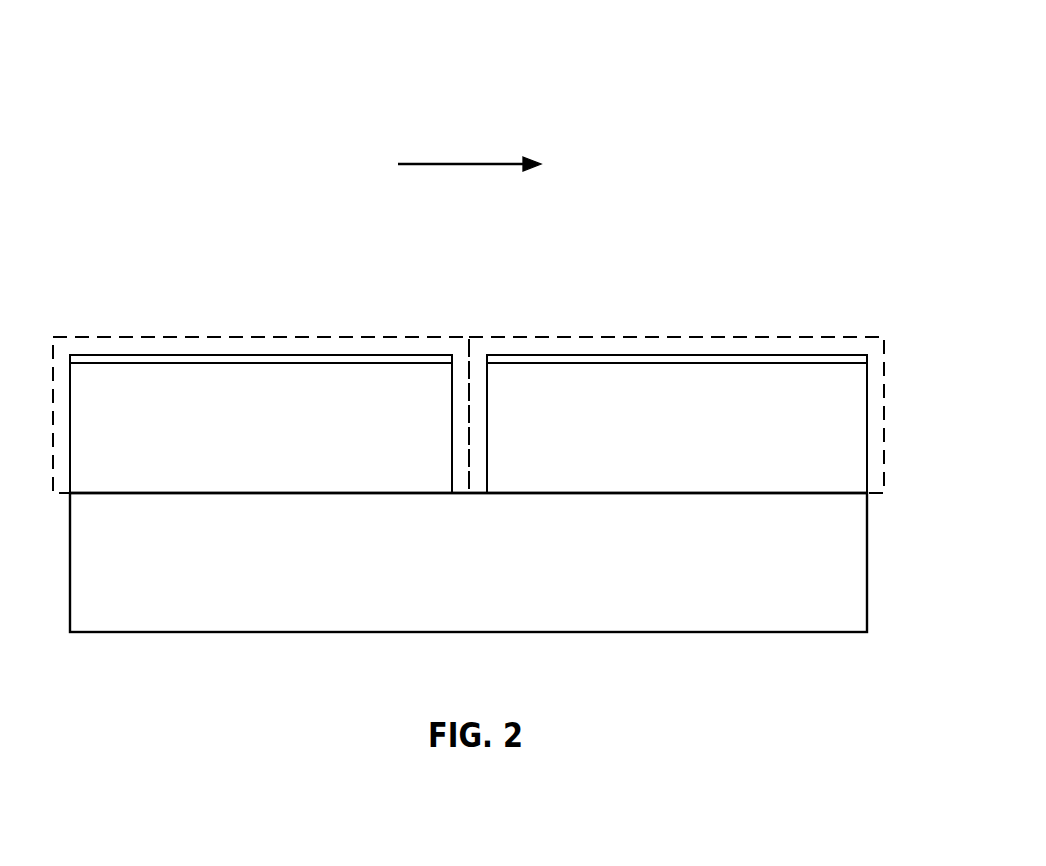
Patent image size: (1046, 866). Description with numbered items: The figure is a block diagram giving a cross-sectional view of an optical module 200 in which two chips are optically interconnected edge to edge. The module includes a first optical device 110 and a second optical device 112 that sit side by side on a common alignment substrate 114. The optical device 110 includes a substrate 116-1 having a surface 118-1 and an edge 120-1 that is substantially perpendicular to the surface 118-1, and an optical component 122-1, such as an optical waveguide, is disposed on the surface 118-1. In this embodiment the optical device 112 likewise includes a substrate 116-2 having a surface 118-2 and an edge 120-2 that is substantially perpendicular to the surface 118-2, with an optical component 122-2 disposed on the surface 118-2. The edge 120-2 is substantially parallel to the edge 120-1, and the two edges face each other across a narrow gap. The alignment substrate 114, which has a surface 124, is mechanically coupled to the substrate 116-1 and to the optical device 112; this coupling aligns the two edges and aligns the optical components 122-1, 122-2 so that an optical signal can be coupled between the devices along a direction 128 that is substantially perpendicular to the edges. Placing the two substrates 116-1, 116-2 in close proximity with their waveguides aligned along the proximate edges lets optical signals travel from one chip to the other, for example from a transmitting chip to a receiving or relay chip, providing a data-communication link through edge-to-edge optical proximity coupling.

The optical module 200 is at (660, 65).
The direction 128 is at (467, 164).
The optical device 110 is at (212, 336).
The optical device 112 is at (748, 336).
The alignment substrate 114 is at (483, 582).
The surface 124 is at (270, 493).
The substrate 116-1 is at (286, 446).
The substrate 116-2 is at (702, 446).
The optical component 122-1 is at (278, 358).
The optical component 122-2 is at (660, 360).
The surface 118-1 is at (383, 358).
The surface 118-2 is at (633, 360).
The edge 120-1 is at (454, 378).
The edge 120-2 is at (487, 413).